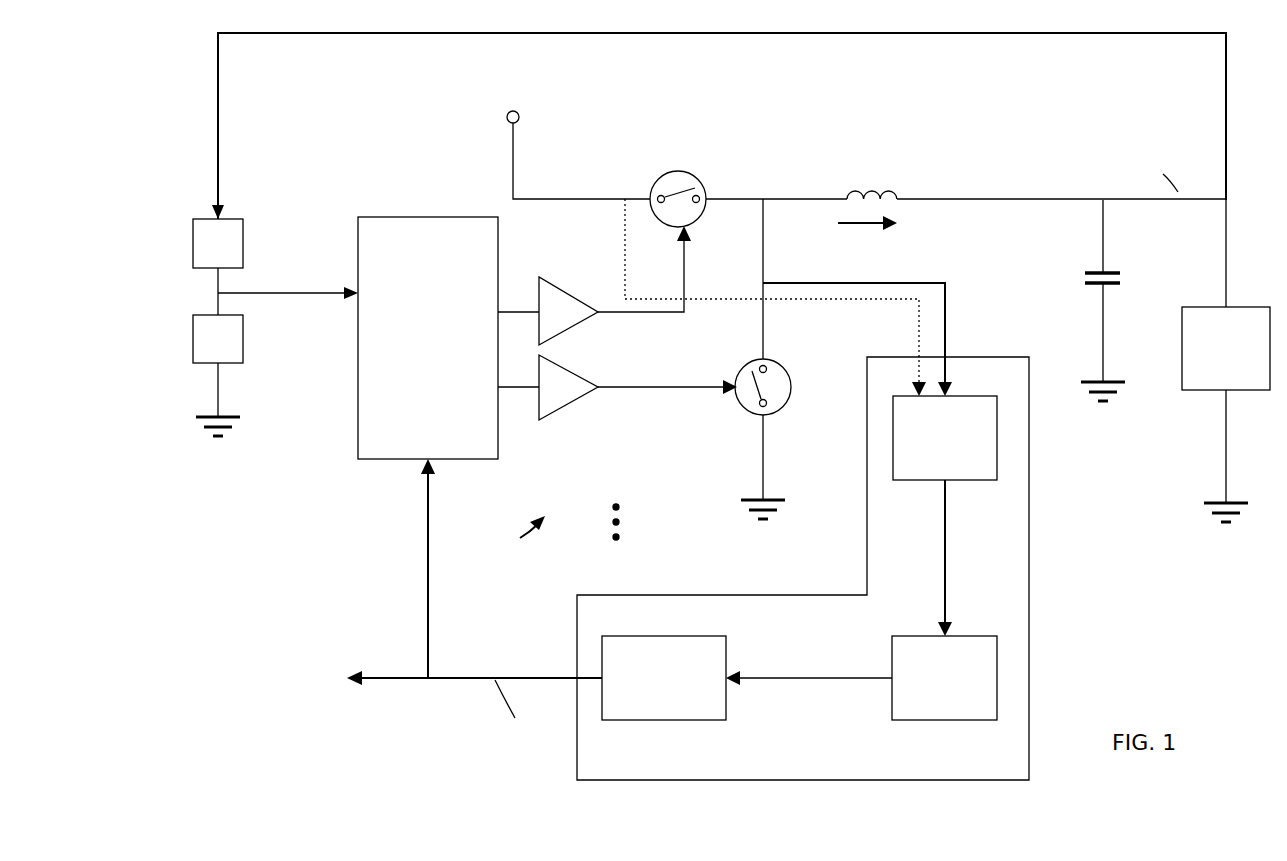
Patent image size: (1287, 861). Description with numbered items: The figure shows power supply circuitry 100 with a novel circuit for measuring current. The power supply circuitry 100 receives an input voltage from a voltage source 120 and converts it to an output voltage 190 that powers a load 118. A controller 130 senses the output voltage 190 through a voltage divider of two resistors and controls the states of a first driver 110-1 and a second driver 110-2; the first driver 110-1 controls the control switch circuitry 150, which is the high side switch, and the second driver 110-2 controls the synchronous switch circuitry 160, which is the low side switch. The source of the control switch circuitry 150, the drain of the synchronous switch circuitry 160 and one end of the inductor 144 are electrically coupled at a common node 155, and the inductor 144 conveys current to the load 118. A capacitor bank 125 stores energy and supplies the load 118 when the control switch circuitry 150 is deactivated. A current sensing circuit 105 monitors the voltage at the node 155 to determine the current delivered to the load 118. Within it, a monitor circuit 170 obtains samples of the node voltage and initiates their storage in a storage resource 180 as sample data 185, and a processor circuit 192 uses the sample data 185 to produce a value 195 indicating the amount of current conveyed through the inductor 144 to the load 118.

The power supply circuitry 100 is at (654, 85).
The current sensing circuit 105 is at (1043, 596).
The driver 110-1 is at (570, 273).
The driver 110-2 is at (568, 418).
The load 118 is at (1239, 366).
The voltage source 120 is at (462, 136).
The capacitor bank 125 is at (1080, 280).
The controller 130 is at (441, 358).
The inductor 144 is at (874, 181).
The control switch circuitry 150 is at (683, 175).
The node 155 is at (763, 196).
The synchronous switch circuitry 160 is at (793, 386).
The monitor circuit 170 is at (957, 465).
The storage resource 180 is at (957, 705).
The sample data 185 is at (825, 684).
The output voltage 190 is at (997, 197).
The processor circuit 192 is at (676, 705).
The value 195 is at (514, 718).